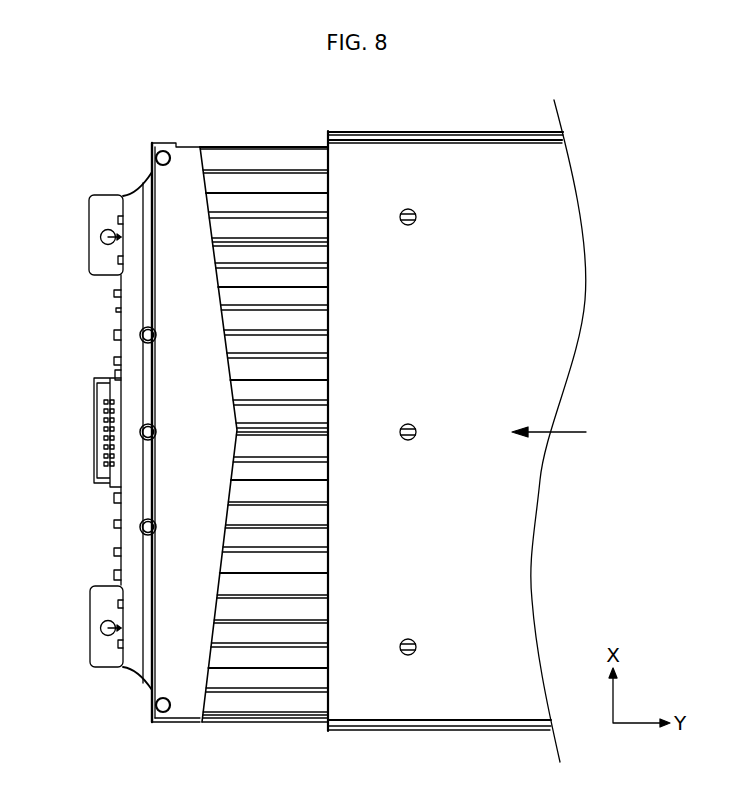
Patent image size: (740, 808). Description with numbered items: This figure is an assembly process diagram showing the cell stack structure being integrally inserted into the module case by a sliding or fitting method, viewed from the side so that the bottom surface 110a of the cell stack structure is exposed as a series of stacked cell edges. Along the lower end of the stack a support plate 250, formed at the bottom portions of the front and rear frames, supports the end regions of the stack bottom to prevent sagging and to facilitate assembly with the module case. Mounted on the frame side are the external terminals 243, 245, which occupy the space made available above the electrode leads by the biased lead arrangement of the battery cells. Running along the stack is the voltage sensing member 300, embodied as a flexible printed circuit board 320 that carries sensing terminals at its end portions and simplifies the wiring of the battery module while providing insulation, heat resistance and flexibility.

The support plate 250 is at (180, 182).
The external terminal 243 is at (89, 224).
The external terminal 245 is at (90, 611).
The bottom surface of the cell stack structure 110a is at (240, 178).
The voltage sensing member 300 is at (494, 134).
The flexible printed circuit board 320 is at (408, 208).